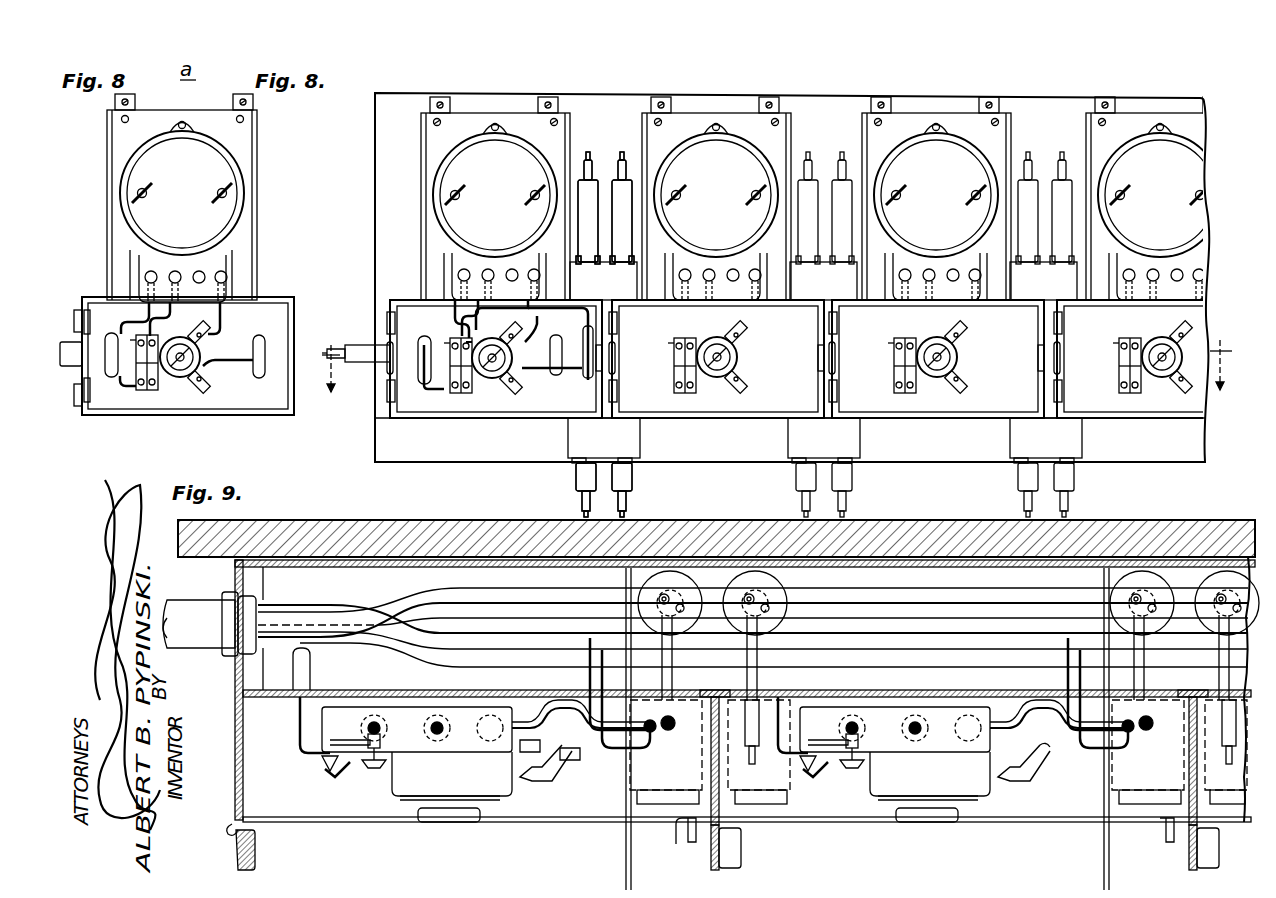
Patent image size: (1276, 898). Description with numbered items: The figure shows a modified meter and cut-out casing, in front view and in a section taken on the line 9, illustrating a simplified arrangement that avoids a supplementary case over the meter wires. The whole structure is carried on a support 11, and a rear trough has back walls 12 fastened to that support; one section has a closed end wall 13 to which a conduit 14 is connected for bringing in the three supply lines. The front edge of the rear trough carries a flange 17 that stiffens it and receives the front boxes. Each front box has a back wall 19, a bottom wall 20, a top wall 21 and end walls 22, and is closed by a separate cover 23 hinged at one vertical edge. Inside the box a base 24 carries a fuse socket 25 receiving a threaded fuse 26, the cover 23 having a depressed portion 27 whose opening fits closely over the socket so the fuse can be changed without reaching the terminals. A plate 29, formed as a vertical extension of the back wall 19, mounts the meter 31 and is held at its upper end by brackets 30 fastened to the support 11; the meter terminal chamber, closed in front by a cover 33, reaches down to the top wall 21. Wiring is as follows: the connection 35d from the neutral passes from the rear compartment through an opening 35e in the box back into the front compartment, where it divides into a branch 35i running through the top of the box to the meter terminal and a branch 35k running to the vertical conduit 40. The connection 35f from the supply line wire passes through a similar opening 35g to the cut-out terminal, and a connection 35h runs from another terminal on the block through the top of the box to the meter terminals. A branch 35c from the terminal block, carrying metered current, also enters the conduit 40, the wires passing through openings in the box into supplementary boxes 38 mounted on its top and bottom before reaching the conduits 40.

In FIG. 8, the section line 9 is at (771, 378).
In FIG. 8, the support 11 is at (375, 430).
In FIG. 9, the support 11 is at (308, 520).
In FIG. 9, the back wall 12 is at (312, 566).
In FIG. 9, the closed end wall 13 is at (235, 665).
In FIG. 8, the conduit 14 is at (352, 345).
In FIG. 9, the conduit 14 is at (195, 605).
In FIG. 9, the flange 17 is at (368, 690).
In FIG. 9, the back wall of box 19 is at (354, 690).
In FIG. 8, the bottom wall 20 is at (548, 418).
In FIG. 9, the bottom wall 20 is at (340, 820).
In FIG. 8, the top wall 21 is at (424, 345).
In FIG. 9, the end wall 22 is at (235, 728).
In FIG. 8, the cover 23 is at (385, 378).
In FIG. 9, the cover 23 is at (232, 850).
In FIG. 9, the base 24 is at (432, 741).
In FIG. 8, the fuse socket 25 is at (460, 393).
In FIG. 9, the fuse socket 25 is at (417, 753).
In FIG. 9, the threaded fuse 26 is at (448, 824).
In FIG. 9, the depressed portion 27 is at (650, 760).
In FIG. 8, the plate 29 is at (446, 131).
In FIG. 8, the bracket 30 is at (432, 104).
In FIG. 8, the meter 31 is at (495, 191).
In FIG. 8, the cover of terminal chamber 33 is at (491, 272).
In FIG. 8, the branch from terminal block 35c is at (590, 352).
In FIG. 8, the connection from neutral 35d is at (556, 378).
In FIG. 8, the opening 35e is at (585, 380).
In FIG. 8, the connection from supply line wire 35f is at (437, 396).
In FIG. 8, the opening 35g is at (424, 348).
In FIG. 8, the connection to meter terminals 35h is at (455, 316).
In FIG. 8, the branch to meter terminal 35i is at (494, 385).
In FIG. 8, the branch to conduit 35k is at (592, 310).
In FIG. 8, the supplementary box 38 is at (604, 334).
In FIG. 8, the vertical conduit 40 is at (616, 190).